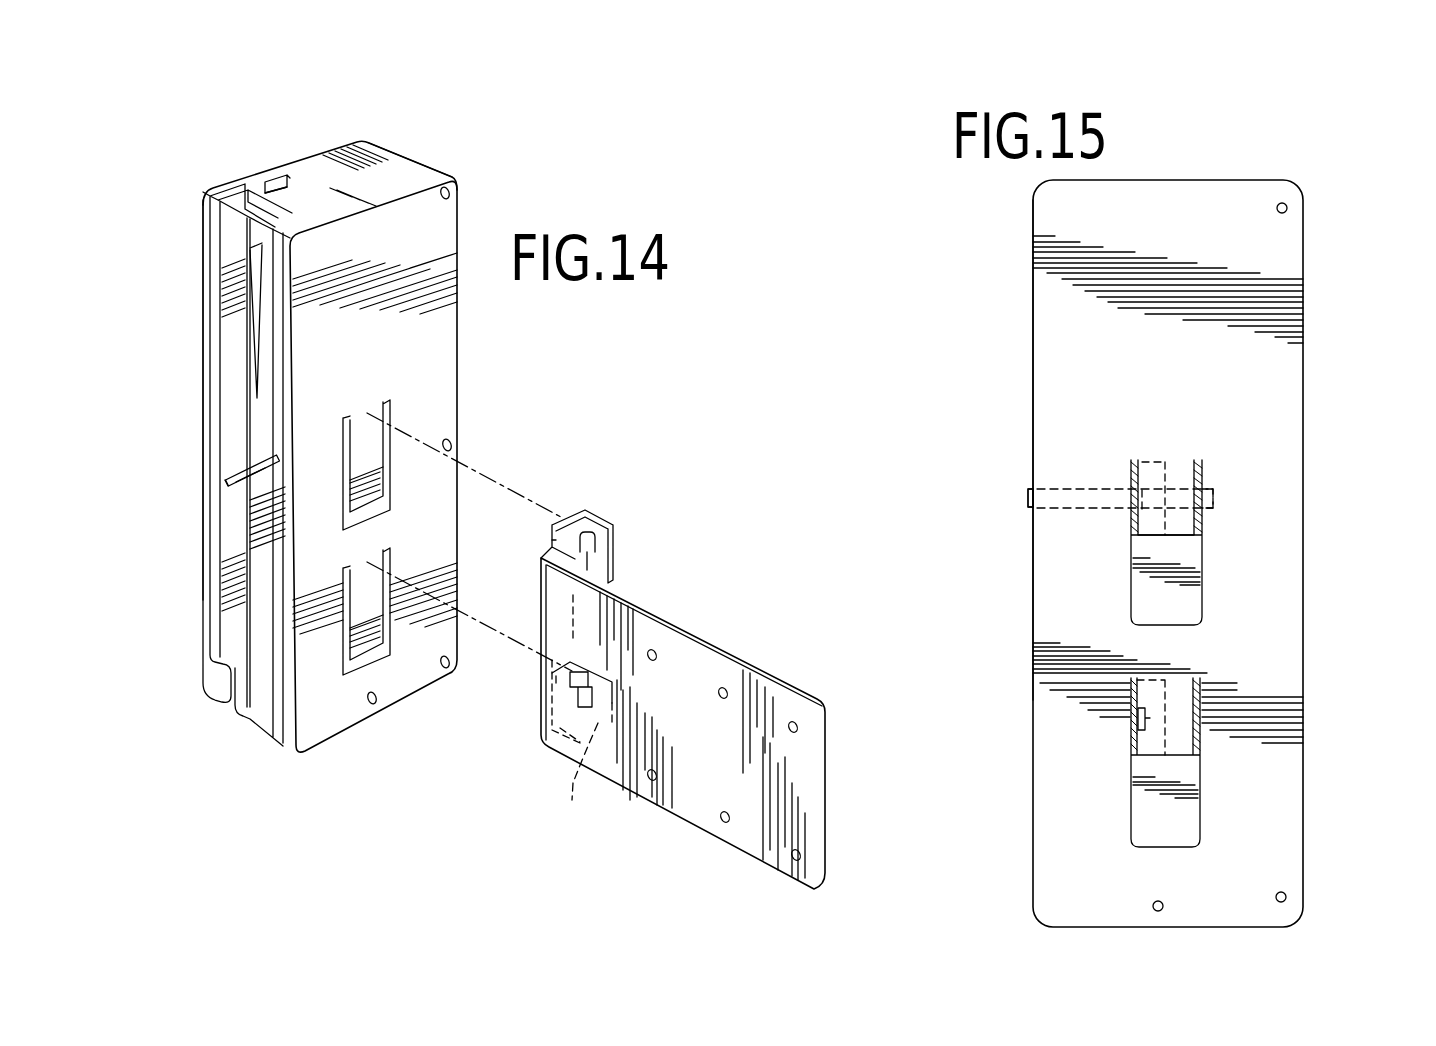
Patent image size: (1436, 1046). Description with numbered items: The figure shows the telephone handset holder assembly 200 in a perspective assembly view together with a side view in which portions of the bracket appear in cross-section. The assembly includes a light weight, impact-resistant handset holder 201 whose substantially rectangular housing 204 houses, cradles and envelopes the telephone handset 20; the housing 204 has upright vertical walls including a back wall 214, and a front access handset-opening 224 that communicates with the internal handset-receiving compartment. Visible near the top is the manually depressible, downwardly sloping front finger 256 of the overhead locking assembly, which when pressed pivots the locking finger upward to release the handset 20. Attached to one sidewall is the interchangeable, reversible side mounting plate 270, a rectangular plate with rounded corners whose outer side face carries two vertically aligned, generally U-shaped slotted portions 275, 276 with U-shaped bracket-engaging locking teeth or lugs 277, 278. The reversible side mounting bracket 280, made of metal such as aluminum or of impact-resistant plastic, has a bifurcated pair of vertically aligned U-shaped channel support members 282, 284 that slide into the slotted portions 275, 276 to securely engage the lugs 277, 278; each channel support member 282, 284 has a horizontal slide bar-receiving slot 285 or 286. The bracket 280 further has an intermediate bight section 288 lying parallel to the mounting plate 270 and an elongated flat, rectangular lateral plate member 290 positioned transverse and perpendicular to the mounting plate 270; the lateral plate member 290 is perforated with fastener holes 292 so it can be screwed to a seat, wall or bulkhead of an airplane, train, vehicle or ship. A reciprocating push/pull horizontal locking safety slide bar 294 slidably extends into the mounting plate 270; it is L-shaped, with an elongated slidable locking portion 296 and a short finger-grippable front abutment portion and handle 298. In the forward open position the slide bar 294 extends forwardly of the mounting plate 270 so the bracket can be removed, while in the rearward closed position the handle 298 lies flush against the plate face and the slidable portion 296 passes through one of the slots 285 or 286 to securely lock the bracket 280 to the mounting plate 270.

In FIG. 14, the telephone handset 20 is at (230, 340).
In FIG. 14, the telephone handset holder assembly 200 is at (204, 183).
In FIG. 15, the telephone handset holder assembly 200 is at (1296, 186).
In FIG. 14, the handset holder 201 is at (202, 211).
In FIG. 15, the handset holder 201 is at (1033, 222).
In FIG. 14, the housing 204 is at (370, 152).
In FIG. 14, the back wall 214 is at (402, 158).
In FIG. 14, the front access handset-opening 224 is at (220, 218).
In FIG. 14, the front finger 256 is at (255, 195).
In FIG. 14, the side mounting plate 270 is at (443, 338).
In FIG. 15, the side mounting plate 270 is at (1278, 281).
In FIG. 14, the U-shaped slotted portion 275 is at (393, 413).
In FIG. 15, the U-shaped slotted portion 275 is at (1200, 590).
In FIG. 14, the U-shaped slotted portion 276 is at (393, 556).
In FIG. 15, the U-shaped slotted portion 276 is at (1198, 816).
In FIG. 14, the bracket-engaging locking tooth or lug 277 is at (378, 468).
In FIG. 14, the bracket-engaging locking tooth or lug 278 is at (374, 608).
In FIG. 14, the side mounting bracket 280 is at (712, 645).
In FIG. 15, the side mounting bracket 280 is at (1125, 526).
In FIG. 14, the U-shaped channel support member 282 is at (583, 508).
In FIG. 15, the U-shaped channel support member 282 is at (1202, 535).
In FIG. 14, the U-shaped channel support member 284 is at (590, 775).
In FIG. 15, the U-shaped channel support member 284 is at (1203, 717).
In FIG. 14, the slide bar-receiving slot 285 is at (593, 546).
In FIG. 15, the slide bar-receiving slot 285 is at (1202, 498).
In FIG. 14, the slide bar-receiving slot 286 is at (614, 704).
In FIG. 14, the intermediate bight section 288 is at (548, 542).
In FIG. 14, the lateral plate member 290 is at (803, 788).
In FIG. 14, the fastener holes 292 is at (800, 732).
In FIG. 14, the locking safety slide bar 294 is at (232, 466).
In FIG. 15, the locking safety slide bar 294 is at (1060, 508).
In FIG. 14, the elongated slidable locking portion 296 is at (257, 476).
In FIG. 15, the elongated slidable locking portion 296 is at (1083, 488).
In FIG. 14, the front abutment portion and handle 298 is at (233, 492).